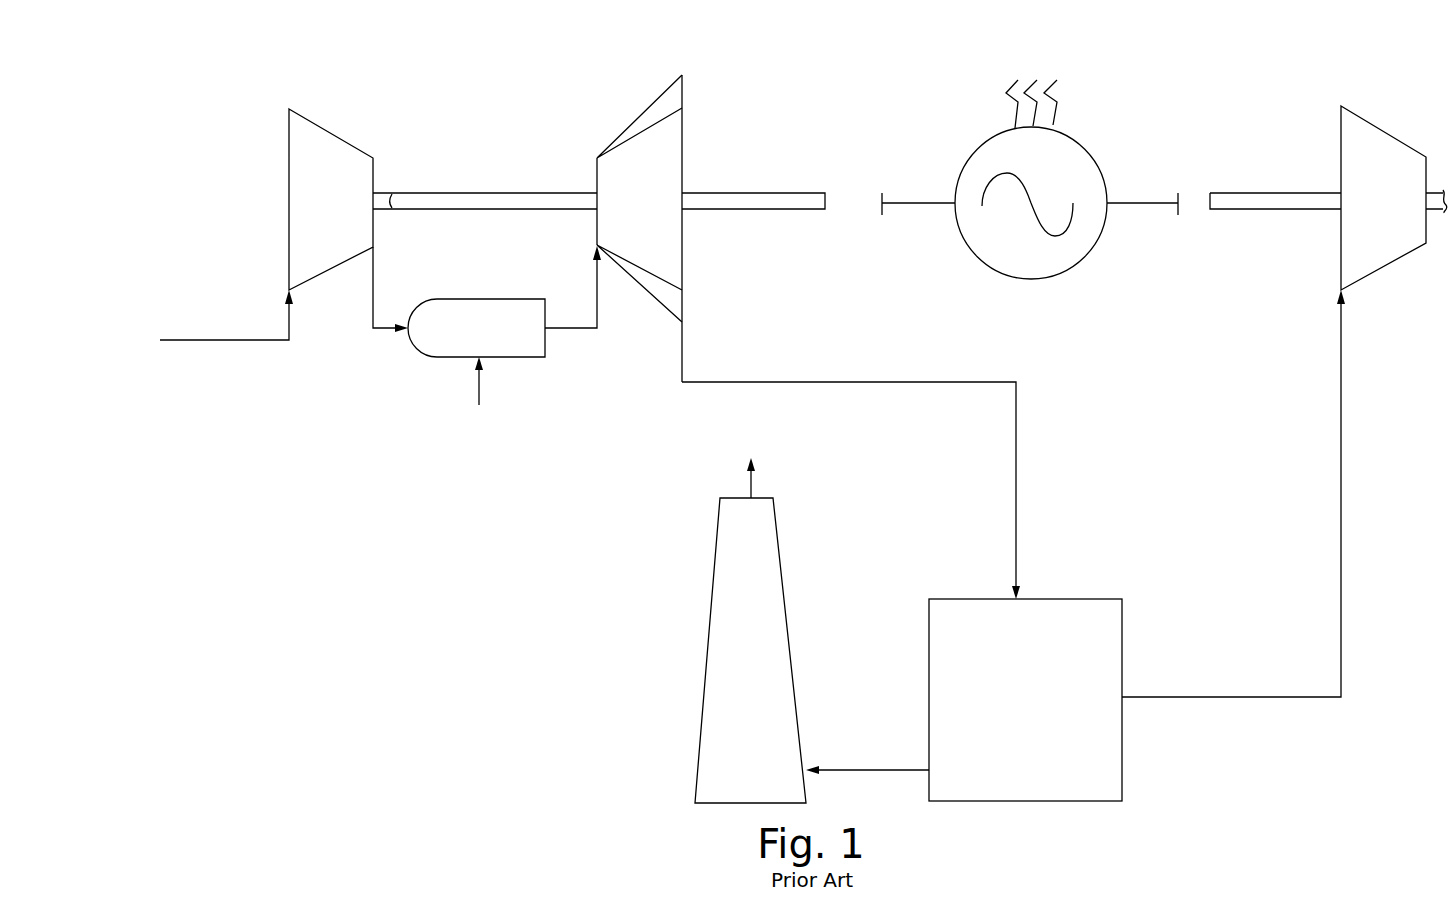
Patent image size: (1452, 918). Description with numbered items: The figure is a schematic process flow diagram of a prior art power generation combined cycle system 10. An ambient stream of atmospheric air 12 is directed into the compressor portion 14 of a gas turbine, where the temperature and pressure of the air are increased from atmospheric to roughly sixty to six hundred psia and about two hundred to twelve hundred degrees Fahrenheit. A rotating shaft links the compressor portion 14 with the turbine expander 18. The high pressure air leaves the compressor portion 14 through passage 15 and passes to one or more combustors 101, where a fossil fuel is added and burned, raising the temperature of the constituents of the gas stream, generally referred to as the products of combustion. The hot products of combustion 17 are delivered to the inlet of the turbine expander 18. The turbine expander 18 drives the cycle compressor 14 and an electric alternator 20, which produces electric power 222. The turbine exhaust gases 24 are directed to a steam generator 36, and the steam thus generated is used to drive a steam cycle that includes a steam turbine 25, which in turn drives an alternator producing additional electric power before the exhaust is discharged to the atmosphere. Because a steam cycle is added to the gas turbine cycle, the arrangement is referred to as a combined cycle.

The power generation combined cycle system 10 is at (574, 568).
The atmospheric air 12 is at (233, 340).
The compressor portion 14 is at (326, 128).
The passage 15 is at (373, 283).
The hot products of combustion 17 is at (580, 330).
The turbine expander 18 is at (632, 123).
The electric alternator 20 is at (1093, 250).
The electric power 222 is at (1052, 92).
The turbine exhaust gases 24 is at (876, 381).
The steam turbine 25 is at (1341, 123).
The steam generator 36 is at (929, 678).
The combustors 101 is at (445, 358).